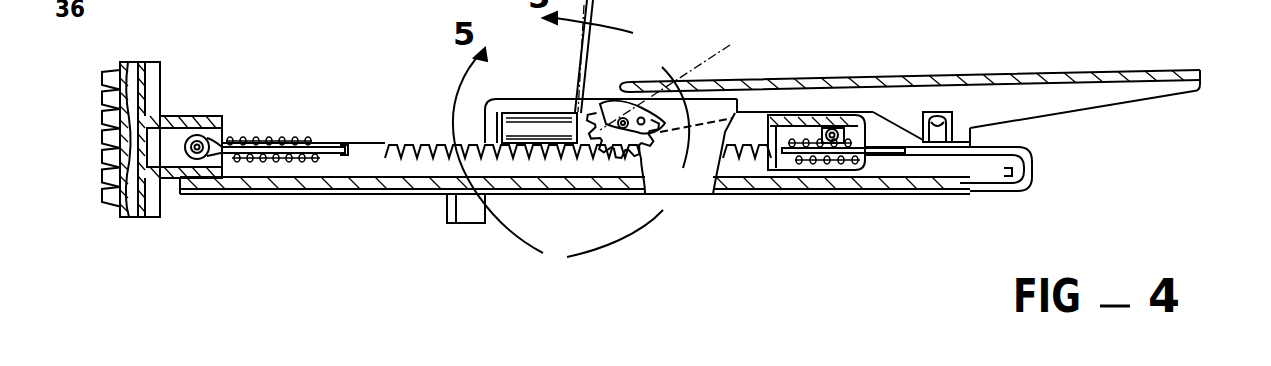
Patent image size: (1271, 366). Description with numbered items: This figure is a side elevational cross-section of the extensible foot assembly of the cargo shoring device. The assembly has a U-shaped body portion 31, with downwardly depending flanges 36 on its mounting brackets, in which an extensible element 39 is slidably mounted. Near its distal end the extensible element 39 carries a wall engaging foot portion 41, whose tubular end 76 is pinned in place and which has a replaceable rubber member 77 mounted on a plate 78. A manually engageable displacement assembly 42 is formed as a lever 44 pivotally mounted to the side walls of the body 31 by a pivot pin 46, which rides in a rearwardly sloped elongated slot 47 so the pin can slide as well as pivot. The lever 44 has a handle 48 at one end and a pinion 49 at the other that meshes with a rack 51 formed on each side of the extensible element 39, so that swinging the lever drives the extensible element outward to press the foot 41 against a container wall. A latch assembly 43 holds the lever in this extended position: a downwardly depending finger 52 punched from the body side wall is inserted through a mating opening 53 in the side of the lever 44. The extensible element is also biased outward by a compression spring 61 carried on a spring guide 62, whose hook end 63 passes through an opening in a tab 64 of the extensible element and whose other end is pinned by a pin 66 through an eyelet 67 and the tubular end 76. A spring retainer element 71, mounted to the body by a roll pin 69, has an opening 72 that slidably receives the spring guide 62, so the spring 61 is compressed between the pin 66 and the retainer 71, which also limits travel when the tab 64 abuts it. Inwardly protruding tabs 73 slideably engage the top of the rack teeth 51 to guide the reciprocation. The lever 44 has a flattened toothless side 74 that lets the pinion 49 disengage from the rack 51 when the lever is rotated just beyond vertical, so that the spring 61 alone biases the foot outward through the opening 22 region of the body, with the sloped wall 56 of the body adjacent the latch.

The opening 22 is at (683, 213).
The body portion 31 is at (458, 123).
The downwardly depending flanges 36 is at (460, 210).
The extensible element 39 is at (315, 190).
The foot portion 41 is at (143, 62).
The displacement assembly 42 is at (1152, 59).
The latch assembly 43 is at (950, 108).
The lever 44 is at (830, 97).
The pivot pin 46 is at (641, 110).
The elongated slot 47 is at (613, 100).
The handle 48 is at (1170, 107).
The pinion 49 is at (726, 60).
The rack 51 is at (420, 147).
The finger 52 is at (938, 134).
The opening 53 is at (950, 136).
The inclined wall 56 is at (908, 120).
The compression spring 61 is at (282, 140).
The spring guide 62 is at (340, 147).
The hook end 63 is at (1037, 160).
The tab 64 is at (1030, 181).
The pin 66 is at (208, 130).
The eyelet 67 is at (197, 135).
The roll pin 69 is at (834, 130).
The spring retainer element 71 is at (805, 114).
The opening 72 is at (872, 155).
The inwardly protruding tabs 73 is at (533, 135).
The flattened toothless side 74 is at (571, 131).
The tubular end 76 is at (207, 172).
The rubber member 77 is at (133, 213).
The plate 78 is at (157, 217).